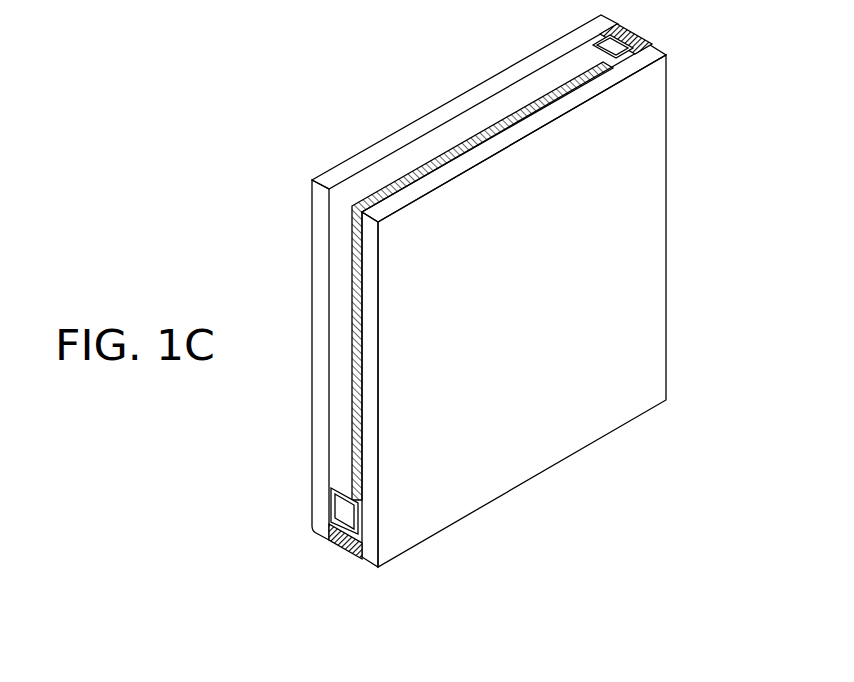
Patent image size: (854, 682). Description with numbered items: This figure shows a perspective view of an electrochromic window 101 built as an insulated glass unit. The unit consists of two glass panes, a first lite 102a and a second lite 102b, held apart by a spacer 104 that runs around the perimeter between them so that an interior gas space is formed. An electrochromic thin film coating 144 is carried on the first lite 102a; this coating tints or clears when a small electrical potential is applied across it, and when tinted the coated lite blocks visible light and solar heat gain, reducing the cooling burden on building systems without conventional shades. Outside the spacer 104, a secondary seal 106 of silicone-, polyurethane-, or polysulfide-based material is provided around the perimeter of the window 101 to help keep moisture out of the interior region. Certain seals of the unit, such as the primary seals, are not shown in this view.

The electrochromic window 101 is at (322, 63).
The first lite 102a is at (637, 178).
The second lite 102b is at (480, 93).
The electrochromic thin film coating 144 is at (409, 170).
The spacer 104 is at (347, 513).
The secondary seal 106 is at (337, 545).